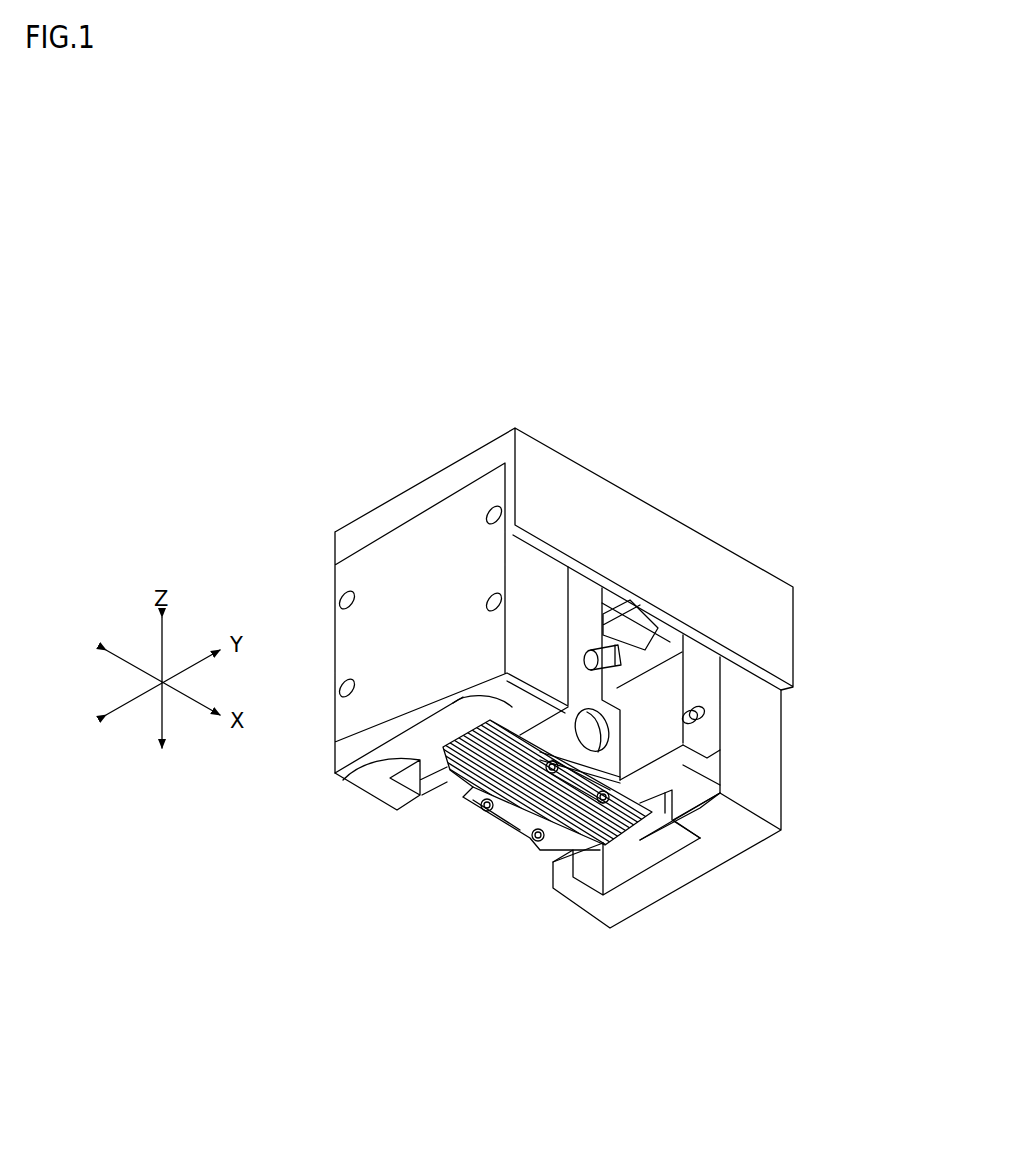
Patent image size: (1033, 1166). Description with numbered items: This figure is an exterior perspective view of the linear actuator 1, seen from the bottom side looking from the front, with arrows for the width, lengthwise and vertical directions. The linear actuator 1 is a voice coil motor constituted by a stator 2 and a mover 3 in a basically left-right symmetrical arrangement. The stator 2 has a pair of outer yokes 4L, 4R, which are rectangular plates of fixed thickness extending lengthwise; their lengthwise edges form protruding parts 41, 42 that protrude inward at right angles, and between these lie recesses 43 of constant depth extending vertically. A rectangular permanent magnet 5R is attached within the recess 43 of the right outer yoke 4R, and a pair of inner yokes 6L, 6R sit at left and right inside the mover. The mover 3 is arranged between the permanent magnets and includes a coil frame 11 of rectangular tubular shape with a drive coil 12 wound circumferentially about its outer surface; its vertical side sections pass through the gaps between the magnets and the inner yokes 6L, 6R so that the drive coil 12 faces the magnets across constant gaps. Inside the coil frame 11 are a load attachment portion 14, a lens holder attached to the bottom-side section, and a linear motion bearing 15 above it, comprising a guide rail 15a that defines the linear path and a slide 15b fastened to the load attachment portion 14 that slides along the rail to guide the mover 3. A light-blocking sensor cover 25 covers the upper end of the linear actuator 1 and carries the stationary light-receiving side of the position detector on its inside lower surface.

The linear actuator 1 is at (687, 458).
The stator 2 is at (744, 866).
The mover 3 is at (513, 830).
The outer yoke 4L is at (362, 797).
The outer yoke 4R is at (665, 902).
The permanent magnet 5R is at (655, 825).
The inner yoke 6L is at (447, 790).
The inner yoke 6R is at (683, 765).
The coil frame 11 is at (547, 858).
The drive coil 12 is at (573, 843).
The load attachment portion 14 is at (607, 752).
The linear motion bearing 15 is at (728, 581).
The guide rail 15a is at (643, 635).
The slide 15b is at (672, 685).
The light-blocking sensor cover 25 is at (470, 440).
The protruding part 41 is at (505, 705).
The protruding part 42 is at (388, 802).
The recess 43 is at (385, 788).